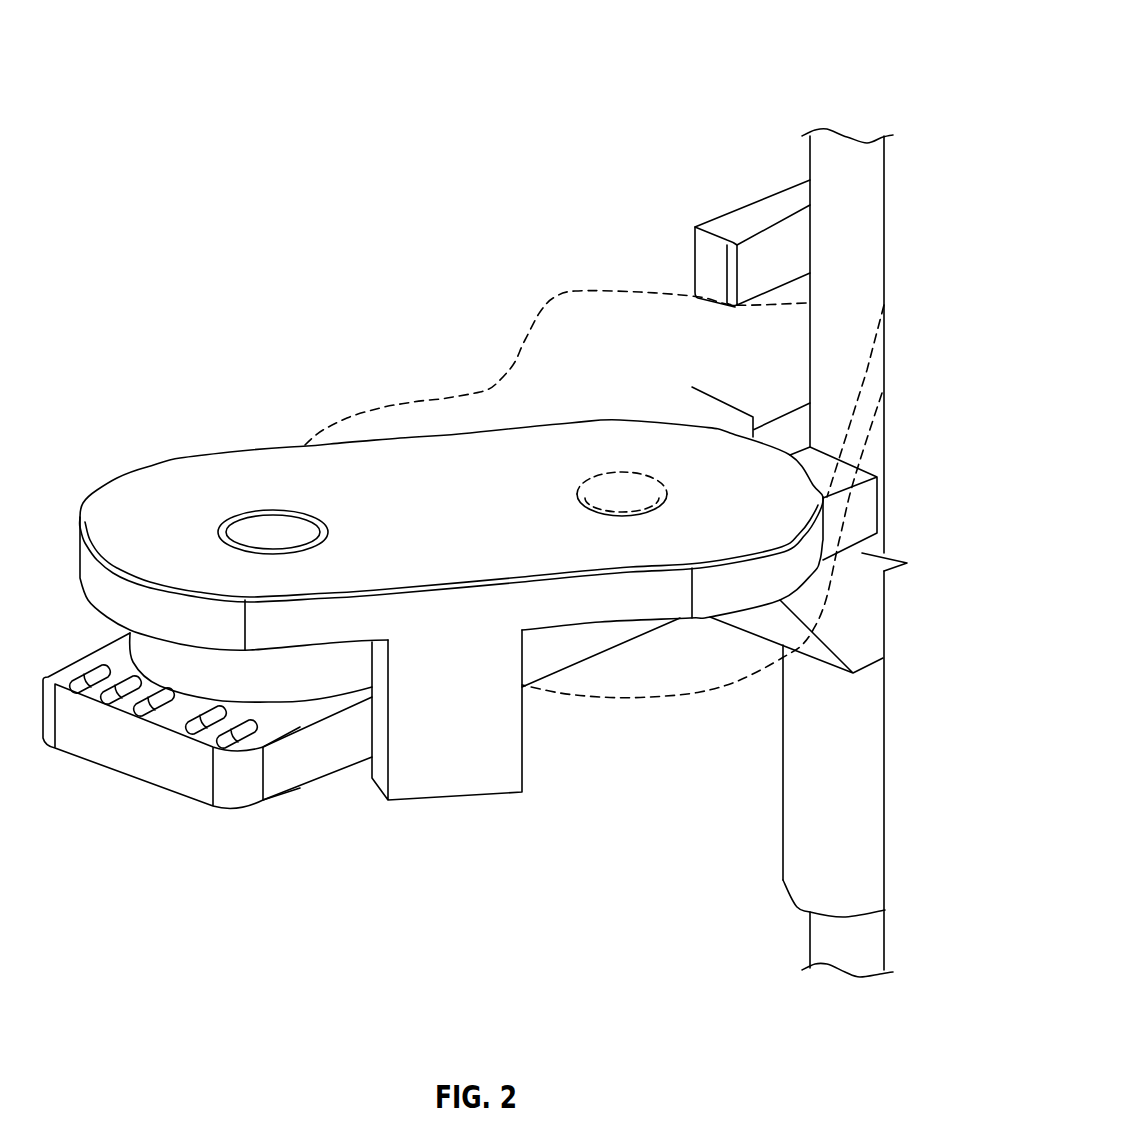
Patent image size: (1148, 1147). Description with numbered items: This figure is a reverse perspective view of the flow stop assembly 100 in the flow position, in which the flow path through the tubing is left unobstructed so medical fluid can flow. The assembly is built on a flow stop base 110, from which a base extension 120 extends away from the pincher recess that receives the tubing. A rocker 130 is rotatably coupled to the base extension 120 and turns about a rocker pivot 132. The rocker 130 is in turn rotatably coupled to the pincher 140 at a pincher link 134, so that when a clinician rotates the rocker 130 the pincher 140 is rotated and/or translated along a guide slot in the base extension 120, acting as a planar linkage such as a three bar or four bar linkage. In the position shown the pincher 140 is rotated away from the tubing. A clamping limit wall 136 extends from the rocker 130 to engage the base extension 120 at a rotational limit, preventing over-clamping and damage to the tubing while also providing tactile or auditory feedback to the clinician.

The flow stop assembly 100 is at (866, 43).
The flow stop base 110 is at (862, 773).
The base extension 120 is at (188, 780).
The rocker 130 is at (167, 482).
The rocker pivot 132 is at (273, 528).
The pincher link 134 is at (607, 478).
The clamping limit wall 136 is at (505, 763).
The pincher 140 is at (610, 315).